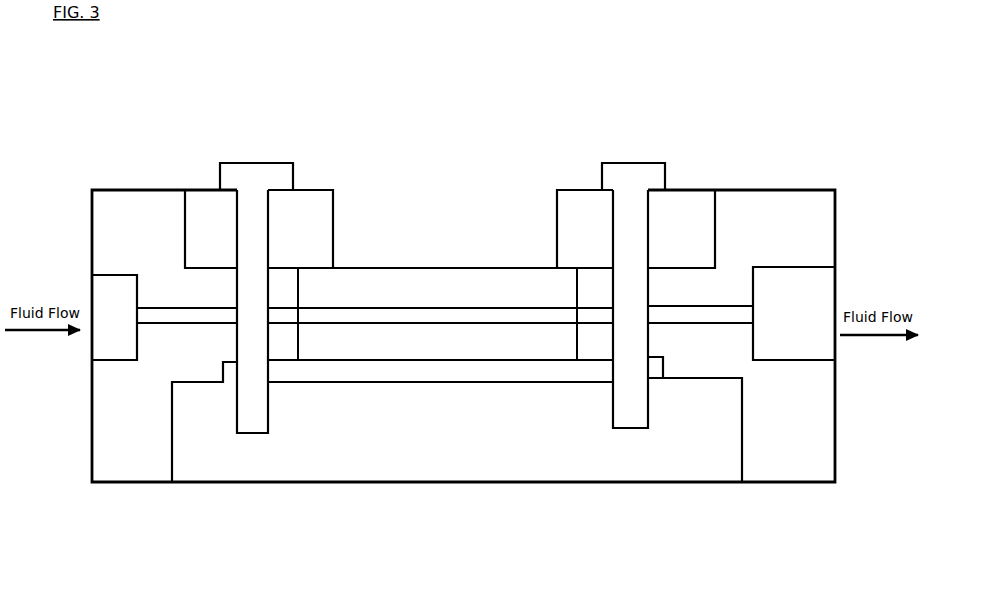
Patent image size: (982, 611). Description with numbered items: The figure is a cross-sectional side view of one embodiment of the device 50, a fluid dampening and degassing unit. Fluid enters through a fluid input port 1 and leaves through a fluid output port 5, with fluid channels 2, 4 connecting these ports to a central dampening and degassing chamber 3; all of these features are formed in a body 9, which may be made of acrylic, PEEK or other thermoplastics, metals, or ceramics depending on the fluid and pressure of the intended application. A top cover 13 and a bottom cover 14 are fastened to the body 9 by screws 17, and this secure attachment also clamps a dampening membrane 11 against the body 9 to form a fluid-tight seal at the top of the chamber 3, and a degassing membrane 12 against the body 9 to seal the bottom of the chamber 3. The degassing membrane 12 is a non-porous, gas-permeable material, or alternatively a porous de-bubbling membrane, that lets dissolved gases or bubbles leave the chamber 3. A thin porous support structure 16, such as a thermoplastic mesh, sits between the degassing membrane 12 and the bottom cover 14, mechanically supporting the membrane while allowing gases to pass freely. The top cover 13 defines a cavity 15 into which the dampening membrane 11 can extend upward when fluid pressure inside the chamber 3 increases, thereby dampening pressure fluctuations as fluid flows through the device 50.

The fluid input port 1 is at (114, 317).
The fluid channel 2 is at (194, 324).
The dampening and degassing chamber 3 is at (347, 320).
The fluid channel 4 is at (706, 319).
The fluid output port 5 is at (794, 313).
The body 9 is at (108, 206).
The dampening membrane 11 is at (440, 314).
The degassing membrane 12 is at (453, 342).
The top cover 13 is at (450, 229).
The bottom cover 14 is at (457, 419).
The cavity 15 is at (445, 236).
The porous support structure 16 is at (440, 369).
The screws 17 is at (249, 175).
The device 50 is at (392, 502).